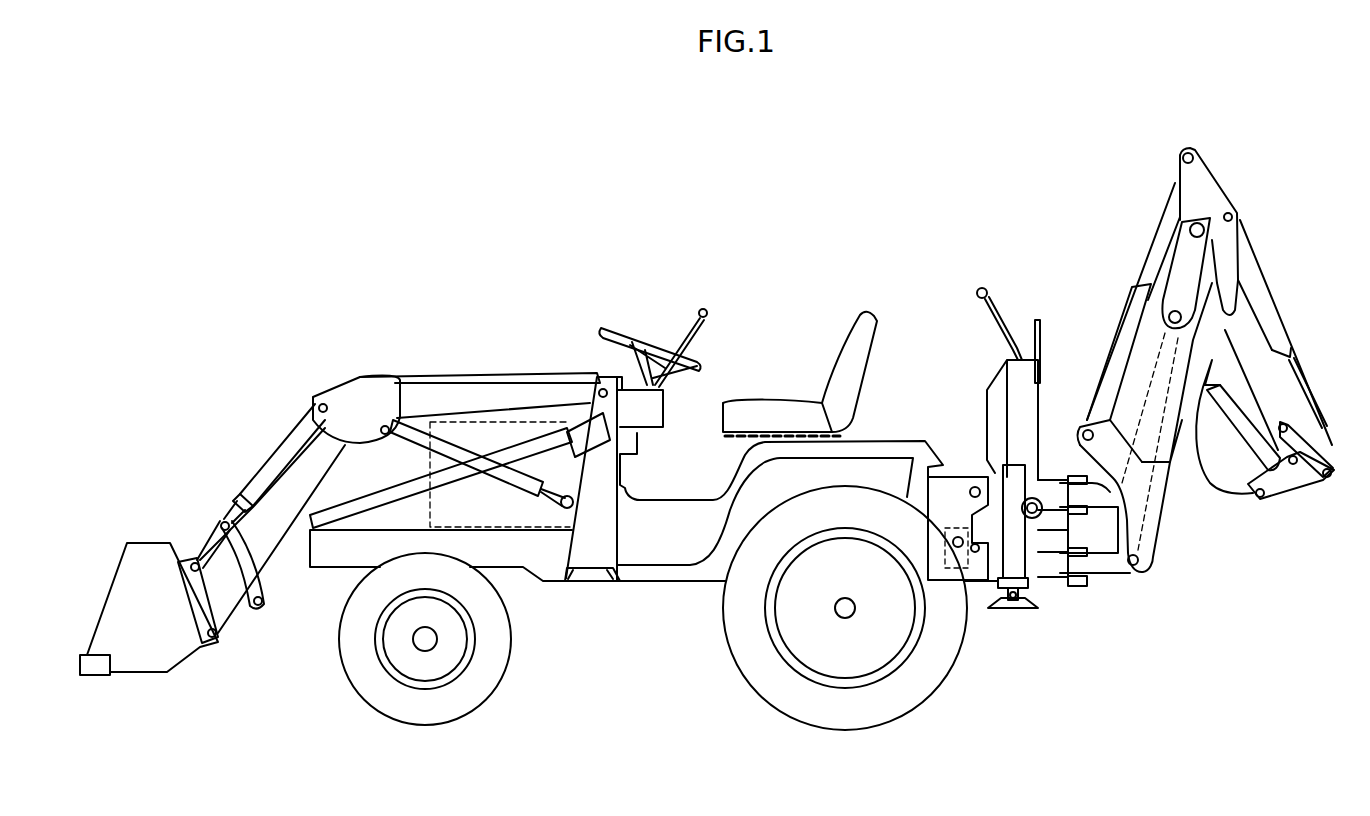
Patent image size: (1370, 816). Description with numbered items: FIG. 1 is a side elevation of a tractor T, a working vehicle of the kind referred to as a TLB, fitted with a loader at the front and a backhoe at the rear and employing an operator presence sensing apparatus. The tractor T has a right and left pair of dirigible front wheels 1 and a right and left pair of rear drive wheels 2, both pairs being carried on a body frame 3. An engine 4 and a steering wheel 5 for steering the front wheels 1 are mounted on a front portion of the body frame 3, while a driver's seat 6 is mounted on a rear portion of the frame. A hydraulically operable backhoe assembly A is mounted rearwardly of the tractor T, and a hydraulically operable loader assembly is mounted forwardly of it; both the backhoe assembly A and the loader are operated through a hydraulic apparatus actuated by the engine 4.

The tractor T is at (568, 305).
The backhoe assembly A is at (1234, 168).
The front wheels 1 is at (366, 698).
The rear drive wheels 2 is at (770, 703).
The body frame 3 is at (551, 567).
The engine 4 is at (490, 418).
The steering wheel 5 is at (620, 333).
The driver's seat 6 is at (843, 340).